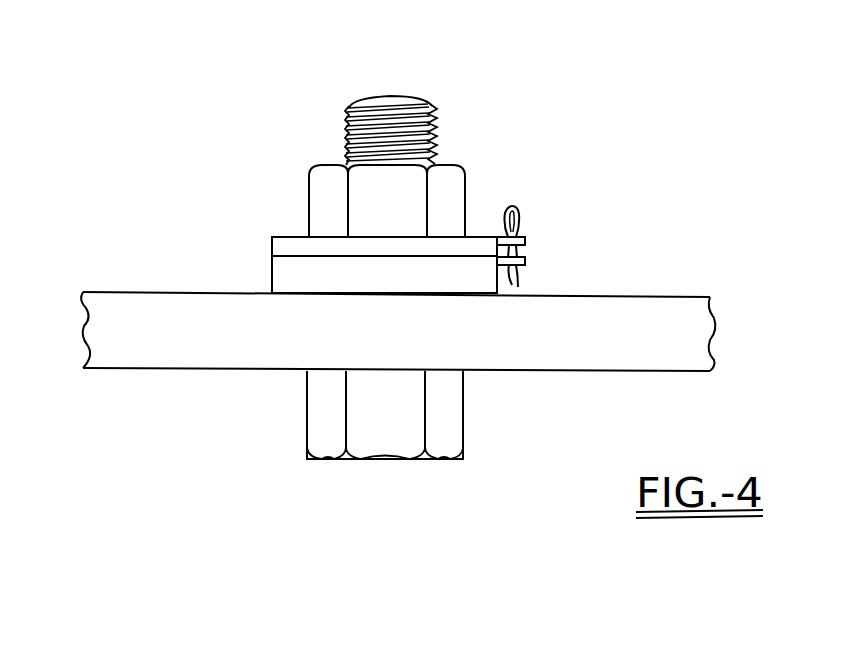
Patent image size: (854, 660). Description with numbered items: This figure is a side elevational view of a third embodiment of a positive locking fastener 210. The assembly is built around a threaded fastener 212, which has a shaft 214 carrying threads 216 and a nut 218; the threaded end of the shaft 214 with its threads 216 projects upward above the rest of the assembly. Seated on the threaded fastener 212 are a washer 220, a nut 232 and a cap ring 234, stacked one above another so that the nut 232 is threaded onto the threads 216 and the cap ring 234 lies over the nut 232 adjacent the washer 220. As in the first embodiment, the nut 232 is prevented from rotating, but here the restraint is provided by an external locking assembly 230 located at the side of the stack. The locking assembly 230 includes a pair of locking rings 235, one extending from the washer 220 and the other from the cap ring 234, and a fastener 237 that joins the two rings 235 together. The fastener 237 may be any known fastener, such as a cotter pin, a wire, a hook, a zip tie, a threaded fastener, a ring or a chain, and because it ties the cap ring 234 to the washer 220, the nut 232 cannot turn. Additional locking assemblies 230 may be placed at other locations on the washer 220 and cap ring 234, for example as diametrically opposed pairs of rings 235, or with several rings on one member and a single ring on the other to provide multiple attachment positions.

The positive locking fastener 210 is at (387, 245).
The threaded fastener 212 is at (338, 415).
The shaft 214 is at (359, 70).
The threads 216 is at (337, 122).
The nut 218 is at (475, 98).
The washer 220 is at (327, 266).
The locking assembly 230 is at (602, 207).
The nut 232 is at (333, 193).
The cap ring 234 is at (327, 230).
The locking rings 235 is at (562, 256).
The fastener 237 is at (565, 238).